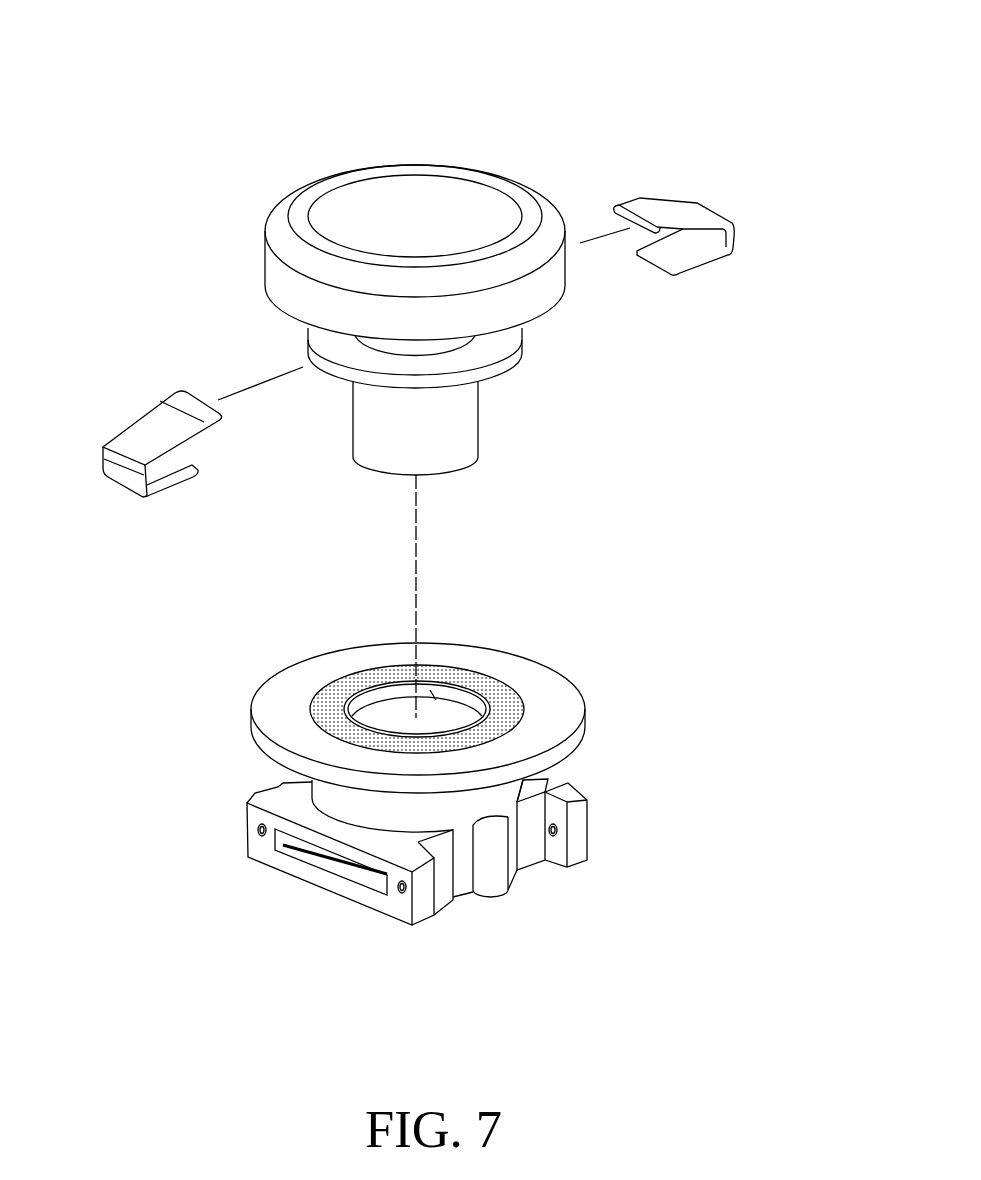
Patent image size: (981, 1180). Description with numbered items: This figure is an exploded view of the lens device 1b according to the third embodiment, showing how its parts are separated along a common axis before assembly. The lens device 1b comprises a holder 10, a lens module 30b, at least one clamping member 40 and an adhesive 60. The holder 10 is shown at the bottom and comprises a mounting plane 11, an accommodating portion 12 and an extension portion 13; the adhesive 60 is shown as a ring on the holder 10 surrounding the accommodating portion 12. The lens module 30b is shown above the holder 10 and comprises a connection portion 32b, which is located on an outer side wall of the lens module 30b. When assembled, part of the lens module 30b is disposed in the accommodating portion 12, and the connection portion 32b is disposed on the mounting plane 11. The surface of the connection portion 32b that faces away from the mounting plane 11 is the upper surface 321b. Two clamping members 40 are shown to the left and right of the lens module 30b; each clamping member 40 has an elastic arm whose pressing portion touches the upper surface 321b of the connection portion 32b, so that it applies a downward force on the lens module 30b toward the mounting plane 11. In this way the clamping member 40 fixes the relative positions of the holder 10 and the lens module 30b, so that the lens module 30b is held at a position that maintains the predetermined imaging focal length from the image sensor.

The lens device 1b is at (258, 72).
The lens module 30b is at (338, 193).
The connection portion 32b is at (325, 360).
The upper surface 321b is at (484, 350).
The clamping member 40 is at (726, 218).
The holder 10 is at (280, 691).
The mounting plane 11 is at (518, 690).
The accommodating portion 12 is at (437, 706).
The extension portion 13 is at (569, 700).
The adhesive 60 is at (368, 670).